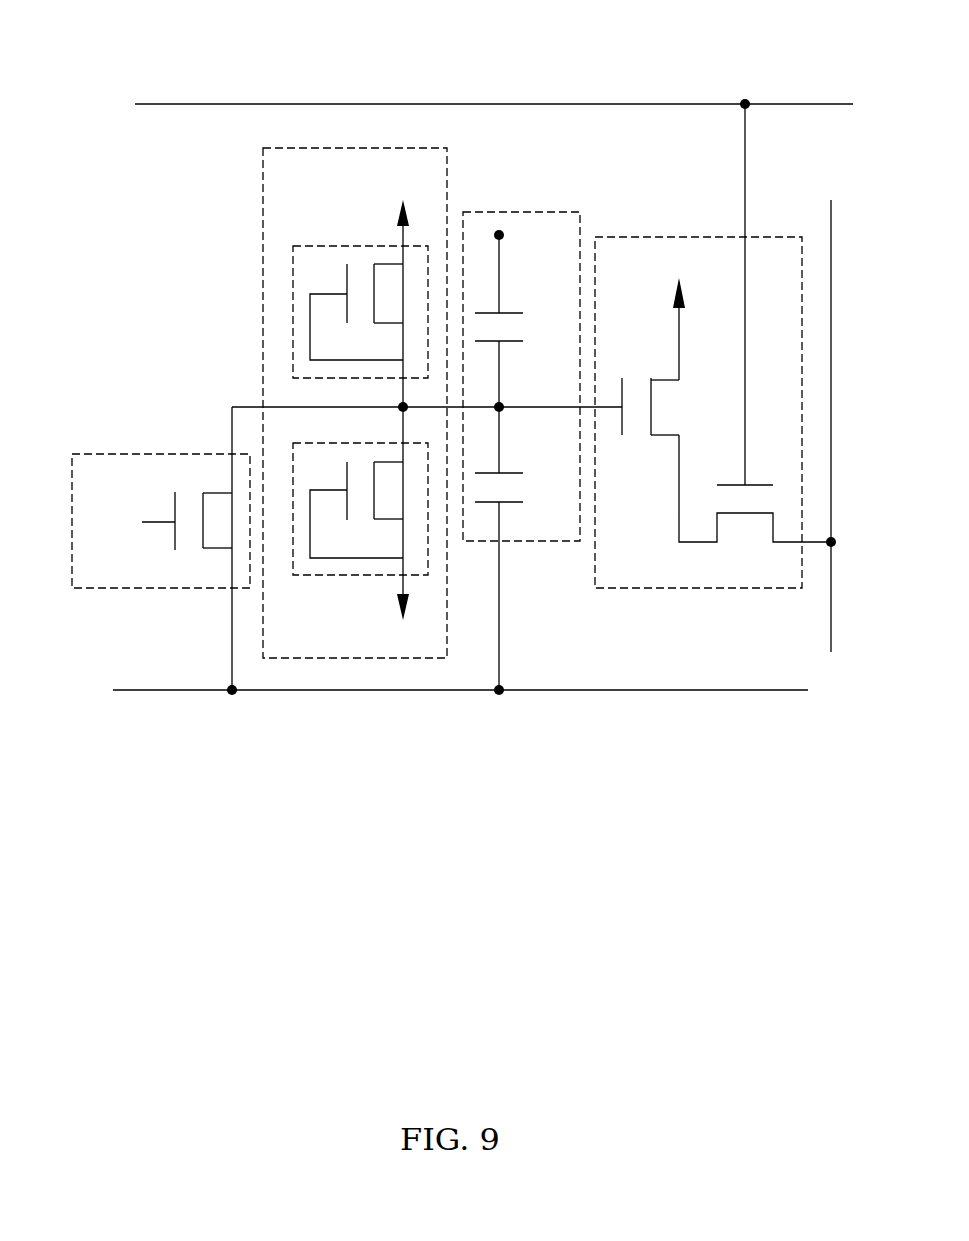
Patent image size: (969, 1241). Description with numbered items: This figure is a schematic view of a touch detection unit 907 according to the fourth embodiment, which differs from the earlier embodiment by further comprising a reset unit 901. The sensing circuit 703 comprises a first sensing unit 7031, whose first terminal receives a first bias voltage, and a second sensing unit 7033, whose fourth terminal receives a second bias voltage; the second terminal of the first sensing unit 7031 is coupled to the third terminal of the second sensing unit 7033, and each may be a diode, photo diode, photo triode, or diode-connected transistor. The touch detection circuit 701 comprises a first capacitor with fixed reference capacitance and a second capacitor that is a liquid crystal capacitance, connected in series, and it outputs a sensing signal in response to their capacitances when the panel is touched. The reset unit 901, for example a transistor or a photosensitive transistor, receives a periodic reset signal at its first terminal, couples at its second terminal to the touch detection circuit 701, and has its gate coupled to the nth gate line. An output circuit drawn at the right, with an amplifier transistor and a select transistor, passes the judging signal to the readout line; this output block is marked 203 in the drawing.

The touch detection unit 907 is at (108, 31).
The sensing circuit 703 is at (263, 192).
The first sensing unit 7031 is at (295, 325).
The second sensing unit 7033 is at (307, 442).
The touch detection circuit 701 is at (558, 212).
The reset unit 901 is at (107, 452).
The amplification and selection unit 203 is at (802, 350).